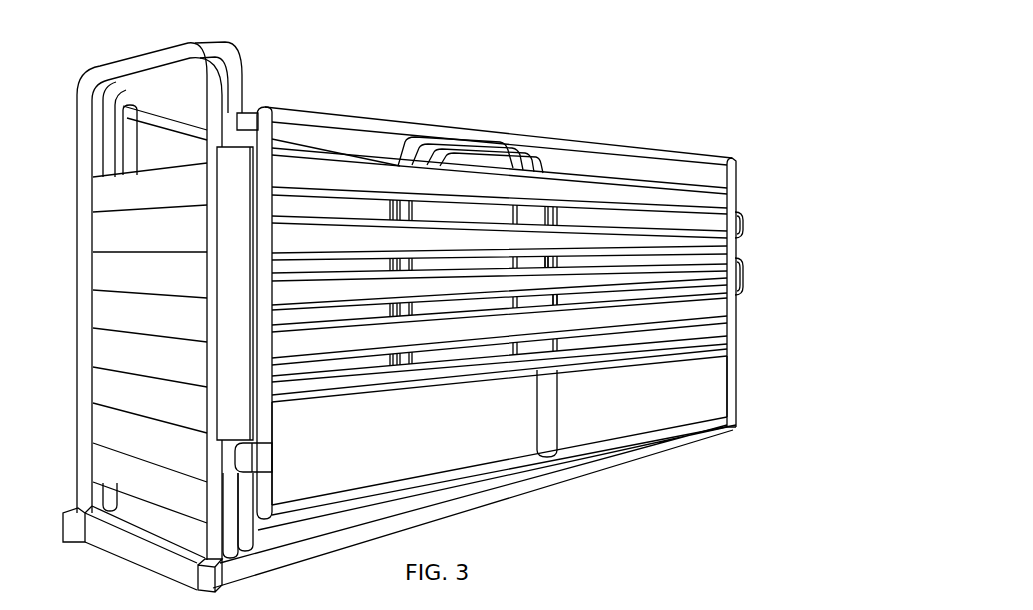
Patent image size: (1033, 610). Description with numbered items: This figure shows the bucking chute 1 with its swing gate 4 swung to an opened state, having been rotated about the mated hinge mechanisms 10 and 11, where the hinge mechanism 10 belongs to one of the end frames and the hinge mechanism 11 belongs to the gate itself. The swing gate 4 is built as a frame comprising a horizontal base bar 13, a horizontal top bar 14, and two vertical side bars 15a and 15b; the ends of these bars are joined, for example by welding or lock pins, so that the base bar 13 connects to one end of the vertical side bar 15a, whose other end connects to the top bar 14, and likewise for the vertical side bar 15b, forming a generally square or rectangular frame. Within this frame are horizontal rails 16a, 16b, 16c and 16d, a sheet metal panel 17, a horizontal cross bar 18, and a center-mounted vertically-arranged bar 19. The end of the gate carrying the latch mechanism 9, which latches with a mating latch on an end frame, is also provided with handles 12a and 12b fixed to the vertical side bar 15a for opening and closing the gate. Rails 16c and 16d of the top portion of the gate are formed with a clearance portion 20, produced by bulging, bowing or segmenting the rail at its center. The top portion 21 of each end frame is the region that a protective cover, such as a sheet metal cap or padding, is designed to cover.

The chute 1 is at (662, 54).
The swing gate 4 is at (528, 137).
The latch mechanism 9 is at (742, 279).
The hinge mechanism 10 is at (247, 443).
The hinge mechanism 11 is at (243, 458).
The handle 12a is at (743, 226).
The handle 12b is at (736, 294).
The horizontal base bar 13 is at (440, 482).
The horizontal top bar 14 is at (355, 122).
The vertical side bar 15a is at (731, 162).
The vertical side bar 15b is at (267, 497).
The horizontal rail 16a is at (717, 204).
The horizontal rail 16b is at (702, 243).
The horizontal rail 16c is at (698, 280).
The horizontal rail 16d is at (697, 317).
The sheet metal panel 17 is at (590, 405).
The horizontal cross bar 18 is at (420, 375).
The center-mounted vertically-arranged bar 19 is at (556, 408).
The clearance portion 20 is at (565, 332).
The top portion 21 is at (243, 87).